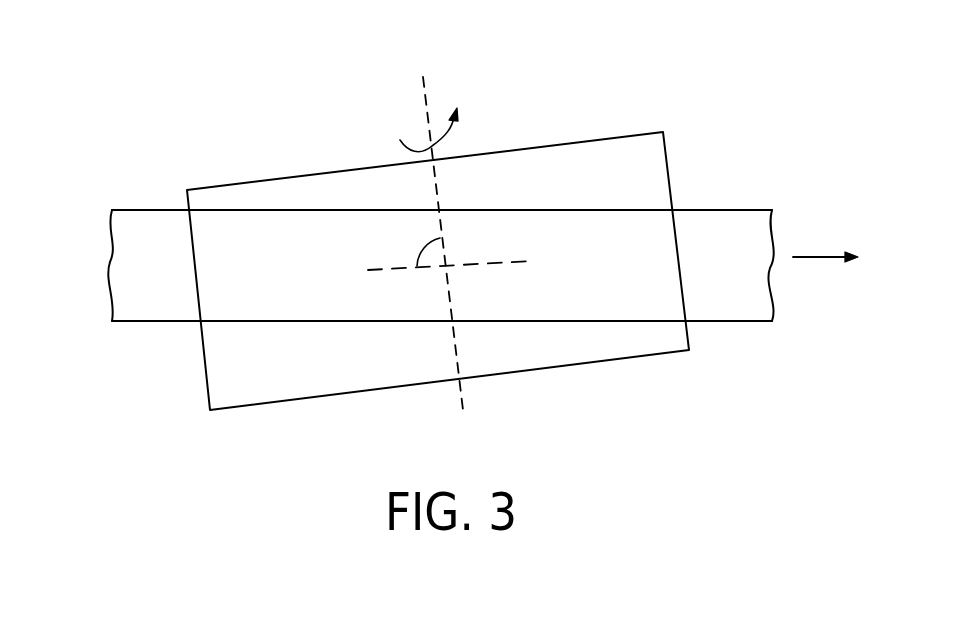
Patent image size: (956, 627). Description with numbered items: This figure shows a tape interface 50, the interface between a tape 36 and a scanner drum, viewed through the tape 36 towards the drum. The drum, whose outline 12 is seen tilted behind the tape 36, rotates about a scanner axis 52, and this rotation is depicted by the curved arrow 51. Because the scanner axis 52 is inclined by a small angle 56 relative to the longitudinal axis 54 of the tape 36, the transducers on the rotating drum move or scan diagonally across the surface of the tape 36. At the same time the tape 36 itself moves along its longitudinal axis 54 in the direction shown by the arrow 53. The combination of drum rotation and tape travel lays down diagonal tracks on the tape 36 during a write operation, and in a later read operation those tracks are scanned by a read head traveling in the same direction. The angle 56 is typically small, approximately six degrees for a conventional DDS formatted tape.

The tilted plate / head 12 is at (618, 360).
The tape 36 is at (752, 322).
The tape interface 50 is at (218, 102).
The arrow 51 is at (463, 128).
The scanner axis 52 is at (463, 408).
The arrow 53 is at (812, 256).
The longitudinal axis 54 is at (517, 261).
The angle 56 is at (438, 241).